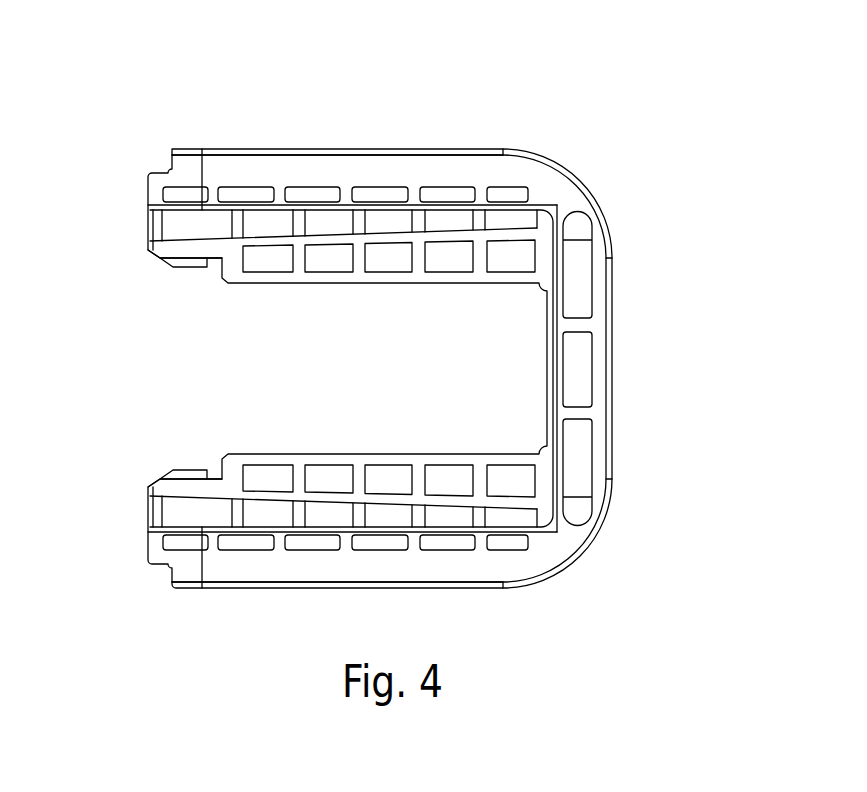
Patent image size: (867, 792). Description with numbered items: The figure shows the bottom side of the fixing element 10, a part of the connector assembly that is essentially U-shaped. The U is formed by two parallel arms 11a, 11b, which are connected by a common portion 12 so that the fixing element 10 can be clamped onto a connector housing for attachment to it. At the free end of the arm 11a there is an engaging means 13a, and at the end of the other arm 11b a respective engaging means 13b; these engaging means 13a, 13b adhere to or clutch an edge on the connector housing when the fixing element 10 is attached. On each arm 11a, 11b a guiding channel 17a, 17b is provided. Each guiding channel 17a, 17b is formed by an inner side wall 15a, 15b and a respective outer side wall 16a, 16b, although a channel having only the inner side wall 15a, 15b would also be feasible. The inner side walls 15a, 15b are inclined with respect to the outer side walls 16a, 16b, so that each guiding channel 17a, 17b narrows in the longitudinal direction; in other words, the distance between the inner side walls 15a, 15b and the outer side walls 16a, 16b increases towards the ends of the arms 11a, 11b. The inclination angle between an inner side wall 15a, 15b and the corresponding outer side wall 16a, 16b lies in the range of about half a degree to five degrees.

The fixing element 10 is at (663, 203).
The arm 11a is at (437, 570).
The arm 11b is at (450, 167).
The common portion 12 is at (597, 323).
The engaging means 13a is at (167, 473).
The engaging means 13b is at (160, 262).
The inner side wall 15a is at (268, 495).
The inner side wall 15b is at (243, 247).
The outer side wall 16a is at (338, 528).
The outer side wall 16b is at (330, 202).
The guiding channel 17a is at (455, 518).
The guiding channel 17b is at (263, 218).